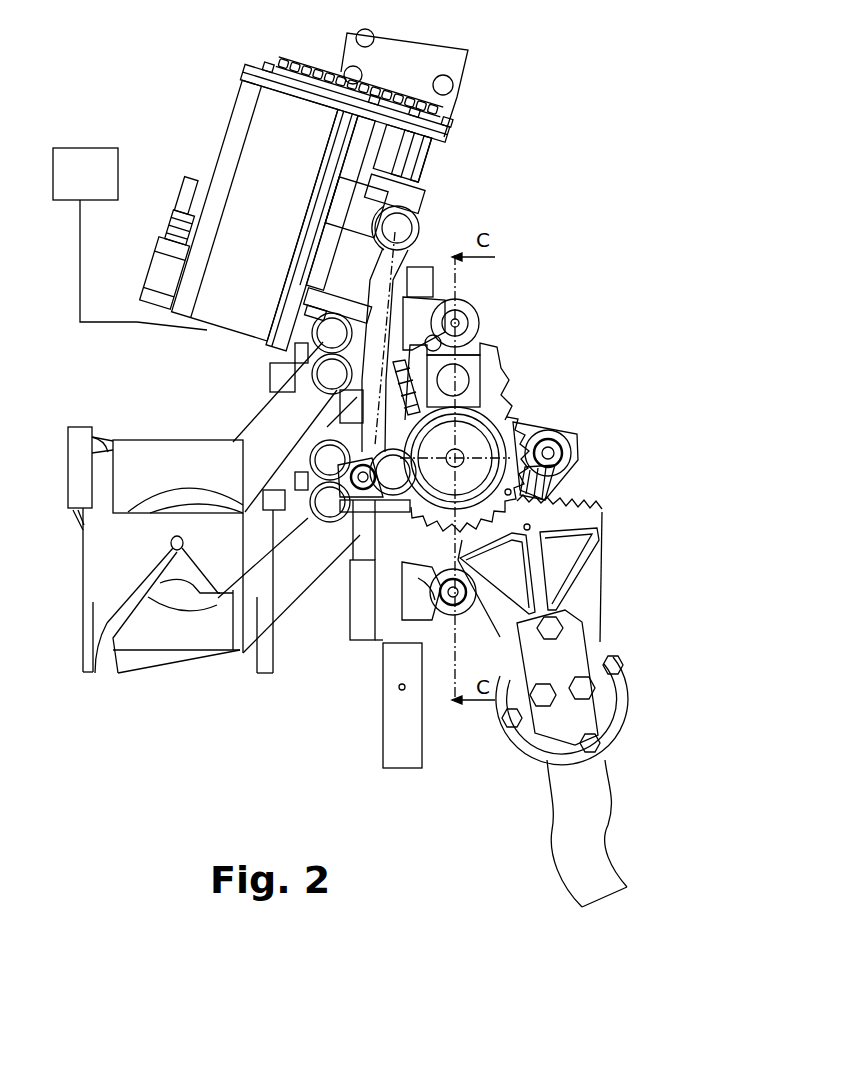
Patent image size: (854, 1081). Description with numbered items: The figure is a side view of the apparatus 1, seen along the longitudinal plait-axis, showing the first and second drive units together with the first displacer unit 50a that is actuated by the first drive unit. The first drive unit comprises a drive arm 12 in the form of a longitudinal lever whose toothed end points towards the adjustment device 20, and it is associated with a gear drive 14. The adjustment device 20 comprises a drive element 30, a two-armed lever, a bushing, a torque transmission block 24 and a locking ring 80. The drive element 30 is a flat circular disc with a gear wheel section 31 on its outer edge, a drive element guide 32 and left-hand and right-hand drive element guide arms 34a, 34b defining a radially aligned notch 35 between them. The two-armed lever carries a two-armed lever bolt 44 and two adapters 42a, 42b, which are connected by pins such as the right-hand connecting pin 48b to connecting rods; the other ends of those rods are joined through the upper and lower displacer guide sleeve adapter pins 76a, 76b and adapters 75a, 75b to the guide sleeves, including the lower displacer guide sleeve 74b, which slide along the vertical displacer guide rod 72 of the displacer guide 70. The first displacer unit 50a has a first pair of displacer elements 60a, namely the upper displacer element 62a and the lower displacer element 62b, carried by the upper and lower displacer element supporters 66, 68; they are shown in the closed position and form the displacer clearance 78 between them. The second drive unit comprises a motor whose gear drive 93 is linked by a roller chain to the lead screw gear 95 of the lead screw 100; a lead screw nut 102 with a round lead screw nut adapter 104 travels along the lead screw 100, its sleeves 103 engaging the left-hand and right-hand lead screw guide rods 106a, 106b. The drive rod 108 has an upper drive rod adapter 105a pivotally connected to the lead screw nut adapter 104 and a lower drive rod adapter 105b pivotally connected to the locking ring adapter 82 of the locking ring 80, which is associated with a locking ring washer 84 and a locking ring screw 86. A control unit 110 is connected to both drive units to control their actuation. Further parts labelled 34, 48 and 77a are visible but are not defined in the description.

The apparatus 1 is at (588, 110).
The drive arm 12 is at (590, 624).
The gear drive 14 is at (652, 507).
The adjustment device 20 is at (600, 388).
The torque transmission block 24 is at (472, 400).
The drive element 30 is at (222, 68).
The gear wheel section 31 is at (540, 480).
The drive element guide 32 is at (255, 210).
The chain 34 is at (358, 90).
The left-hand drive element guide arm 34a is at (417, 373).
The right-hand drive element guide arm 34b is at (492, 362).
The notch 35 is at (476, 368).
The left-hand two-armed lever adapter 42a is at (348, 494).
The right-hand two-armed lever adapter 42b is at (572, 444).
The two-armed lever bolt 44 is at (462, 384).
The bearing 48 is at (340, 494).
The right-hand connecting pin 48b is at (560, 463).
The first displacer unit 50a is at (66, 588).
The first pair of displacer elements 60a is at (179, 528).
The upper displacer element of first displacer unit 62a is at (125, 445).
The lower displacer element of first displacer unit 62b is at (220, 655).
The upper displacer element supporter 66 is at (248, 434).
The lower displacer element supporter 68 is at (272, 610).
The displacer guide 70 is at (373, 648).
The displacer guide rod 72 is at (395, 758).
The lower displacer guide sleeve 74b is at (380, 640).
The upper displacer guide sleeve adapter 75a is at (428, 308).
The lower displacer guide sleeve adapter 75b is at (436, 635).
The upper displacer guide sleeve adapter pin 76a is at (458, 322).
The lower displacer guide sleeve adapter pin 76b is at (458, 603).
The stop block 77a is at (430, 268).
The displacer clearance 78 is at (171, 545).
The locking ring 80 is at (482, 430).
The locking ring adapter 82 is at (387, 497).
The locking ring washer 84 is at (492, 447).
The locking ring screw 86 is at (567, 434).
The gear drive 93 is at (344, 103).
The lead screw gear 95 is at (447, 105).
The lead screw 100 is at (402, 153).
The lead screw nut 102 is at (395, 193).
The sleeves 103 is at (380, 348).
The lead screw nut adapter 104 is at (418, 224).
The upper drive rod adapter 105a is at (418, 240).
The lower drive rod adapter 105b is at (362, 494).
The left-hand lead screw guide rod 106a is at (402, 153).
The right-hand lead screw guide rod 106b is at (421, 159).
The drive rod 108 is at (398, 258).
The control unit 110 is at (80, 148).